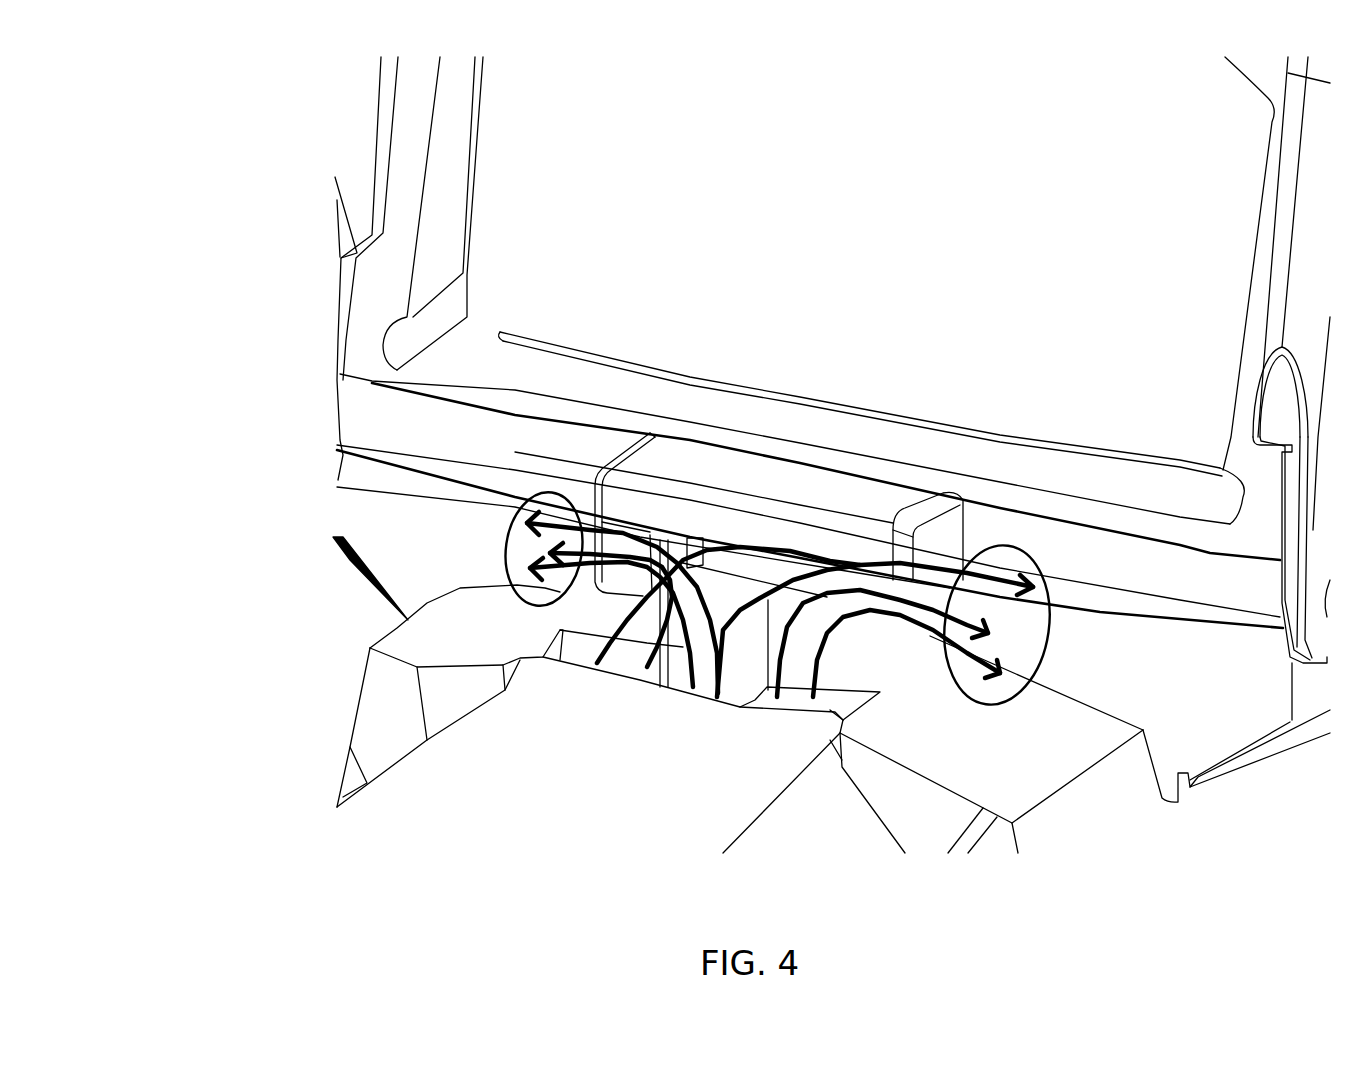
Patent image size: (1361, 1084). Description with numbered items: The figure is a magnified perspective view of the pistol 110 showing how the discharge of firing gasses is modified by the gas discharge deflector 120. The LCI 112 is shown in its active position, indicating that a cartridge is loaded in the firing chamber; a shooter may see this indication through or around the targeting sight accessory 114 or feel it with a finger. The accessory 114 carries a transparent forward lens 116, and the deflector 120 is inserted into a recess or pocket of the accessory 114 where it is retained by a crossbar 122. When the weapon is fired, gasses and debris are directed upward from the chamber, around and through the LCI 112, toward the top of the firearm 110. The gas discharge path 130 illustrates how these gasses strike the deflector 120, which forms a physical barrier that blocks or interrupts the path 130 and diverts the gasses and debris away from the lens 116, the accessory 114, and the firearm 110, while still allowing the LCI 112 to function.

The pistol 110 is at (473, 627).
The LCI 112 is at (693, 638).
The targeting sight accessory 114 is at (390, 283).
The transparent lens 116 is at (745, 250).
The gas discharge deflector 120 is at (735, 470).
The crossbar 122 is at (400, 410).
The gas discharge path 130 is at (505, 522).